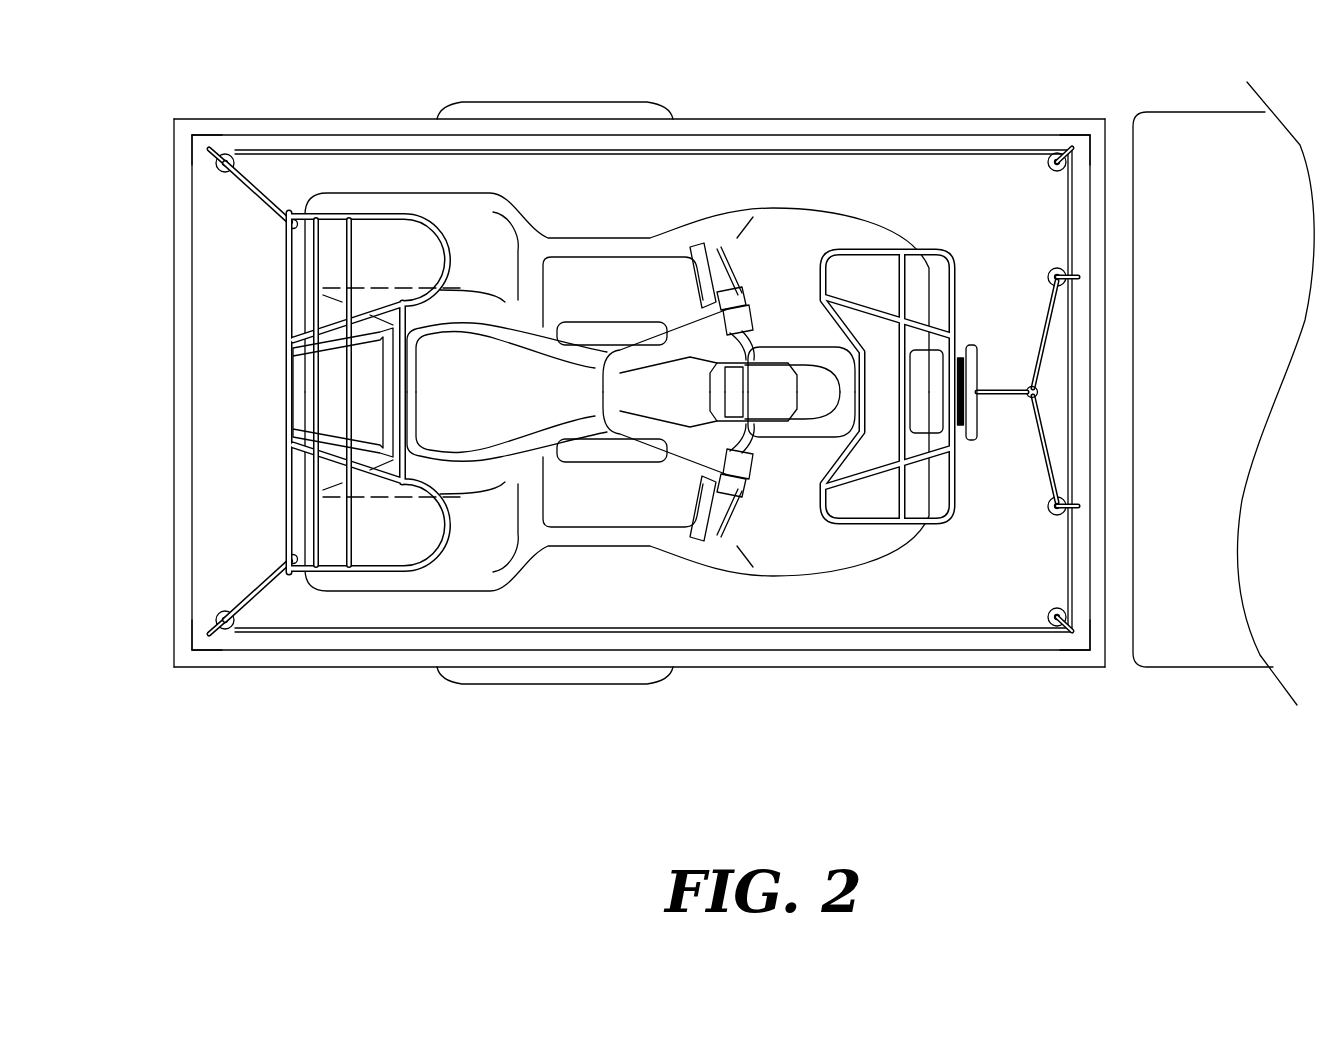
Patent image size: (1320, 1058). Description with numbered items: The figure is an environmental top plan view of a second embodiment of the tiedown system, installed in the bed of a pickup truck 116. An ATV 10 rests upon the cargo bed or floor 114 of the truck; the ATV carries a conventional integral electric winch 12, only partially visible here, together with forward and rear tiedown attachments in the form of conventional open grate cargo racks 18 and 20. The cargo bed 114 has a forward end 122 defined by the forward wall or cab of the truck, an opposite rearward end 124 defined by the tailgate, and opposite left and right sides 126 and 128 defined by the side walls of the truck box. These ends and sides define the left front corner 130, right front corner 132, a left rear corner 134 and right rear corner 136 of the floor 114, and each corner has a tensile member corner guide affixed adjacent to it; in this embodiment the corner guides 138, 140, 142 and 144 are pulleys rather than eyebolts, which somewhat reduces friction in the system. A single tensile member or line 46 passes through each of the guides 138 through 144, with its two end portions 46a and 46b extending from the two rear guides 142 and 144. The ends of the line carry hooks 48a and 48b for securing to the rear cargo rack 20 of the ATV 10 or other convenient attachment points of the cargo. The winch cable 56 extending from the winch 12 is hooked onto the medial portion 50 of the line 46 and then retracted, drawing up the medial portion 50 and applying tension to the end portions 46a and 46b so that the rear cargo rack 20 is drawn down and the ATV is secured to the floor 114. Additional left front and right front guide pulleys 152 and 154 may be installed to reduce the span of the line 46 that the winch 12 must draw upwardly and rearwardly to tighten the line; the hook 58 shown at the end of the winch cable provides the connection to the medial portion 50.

The ATV 10 is at (630, 243).
The integral electric winch 12 is at (975, 350).
The forward cargo rack 18 is at (913, 247).
The rear cargo rack 20 is at (400, 213).
The tensile member or line 46 is at (375, 150).
The first end portion of the line 46a is at (234, 192).
The second end portion of the line 46b is at (250, 592).
The first hook 48a is at (289, 230).
The second hook 48b is at (290, 555).
The medial portion of the line 50 is at (1063, 453).
The winch cable 56 is at (980, 408).
The strap hook 58 is at (1038, 388).
The cargo bed or floor 114 is at (650, 608).
The pickup truck 116 is at (1203, 116).
The forward end of the cargo bed 122 is at (1093, 247).
The rearward end of the cargo bed 124 is at (190, 385).
The left side of the cargo bed 126 is at (722, 137).
The right side of the cargo bed 128 is at (557, 655).
The left front corner 130 is at (1090, 133).
The right front corner 132 is at (1082, 652).
The third bed corner 134 is at (197, 140).
The right rear corner 136 is at (197, 652).
The corner guide 138 is at (1047, 160).
The corner guide 140 is at (1047, 617).
The rear corner guide 142 is at (237, 165).
The rear corner guide 144 is at (243, 618).
The left front guide pulley 152 is at (1047, 270).
The right front guide pulley 154 is at (1047, 512).